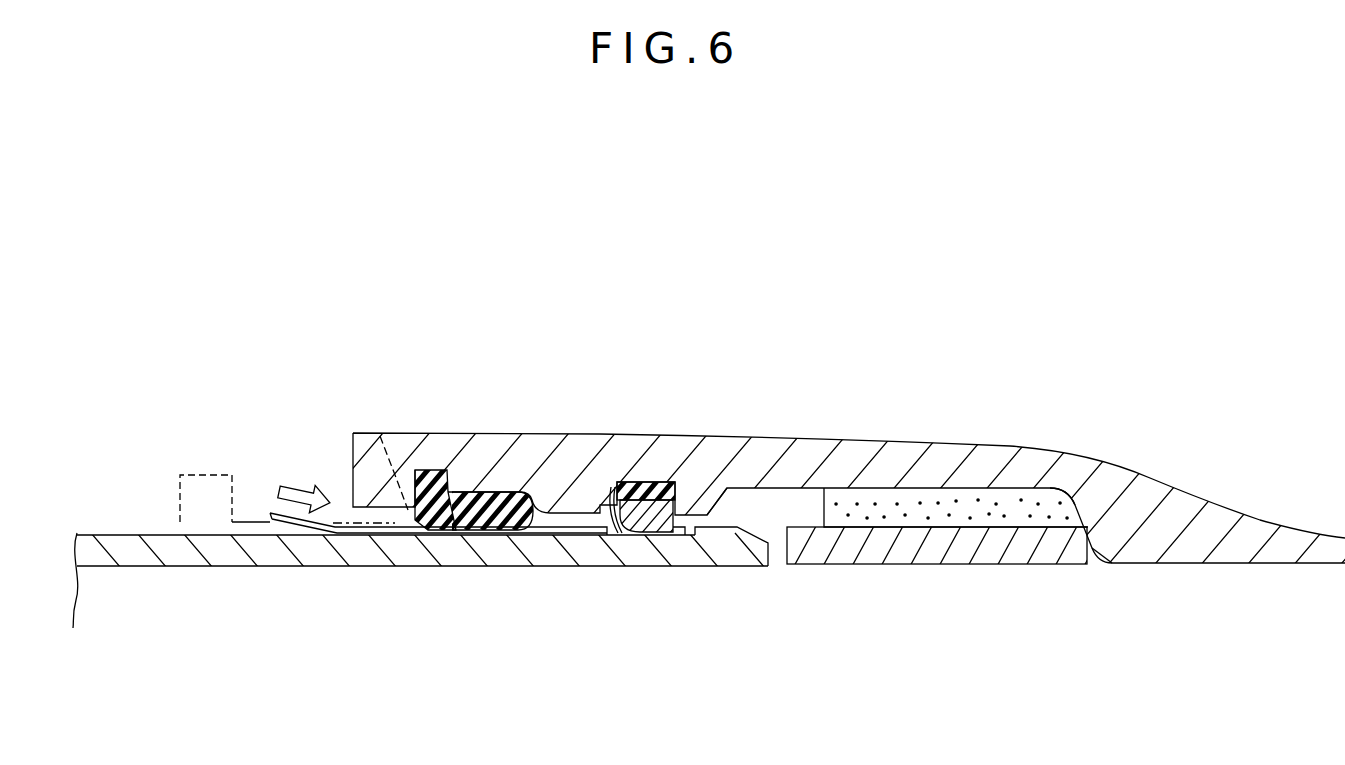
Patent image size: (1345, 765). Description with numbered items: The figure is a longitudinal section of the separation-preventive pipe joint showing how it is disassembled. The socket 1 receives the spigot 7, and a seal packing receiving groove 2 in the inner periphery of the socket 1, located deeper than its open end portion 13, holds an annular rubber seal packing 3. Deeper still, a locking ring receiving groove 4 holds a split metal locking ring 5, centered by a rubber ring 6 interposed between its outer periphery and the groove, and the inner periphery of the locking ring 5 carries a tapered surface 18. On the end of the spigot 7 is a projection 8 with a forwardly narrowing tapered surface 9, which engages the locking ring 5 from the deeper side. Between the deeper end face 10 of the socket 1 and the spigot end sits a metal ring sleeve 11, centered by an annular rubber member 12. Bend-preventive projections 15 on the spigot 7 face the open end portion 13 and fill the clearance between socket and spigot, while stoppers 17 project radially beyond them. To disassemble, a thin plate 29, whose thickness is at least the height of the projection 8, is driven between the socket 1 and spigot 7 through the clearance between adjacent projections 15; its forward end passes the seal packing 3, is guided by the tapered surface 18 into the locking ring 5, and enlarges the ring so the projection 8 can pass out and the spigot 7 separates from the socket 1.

The socket 1 is at (592, 450).
The seal packing receiving groove 2 is at (460, 525).
The seal packing 3 is at (505, 520).
The locking ring receiving groove 4 is at (614, 522).
The locking ring 5 is at (662, 527).
The rubber ring 6 is at (668, 484).
The spigot 7 is at (707, 565).
The projection 8 is at (736, 489).
The tapered surface 9 is at (730, 532).
The deeper end face 10 is at (1097, 563).
The ring sleeve 11 is at (893, 550).
The annular rubber member 12 is at (938, 490).
The open end portion 13 is at (358, 508).
The bend-preventive projections 15 is at (380, 436).
The stoppers 17 is at (228, 473).
The tapered surface 18 is at (628, 522).
The thin plate 29 is at (271, 509).